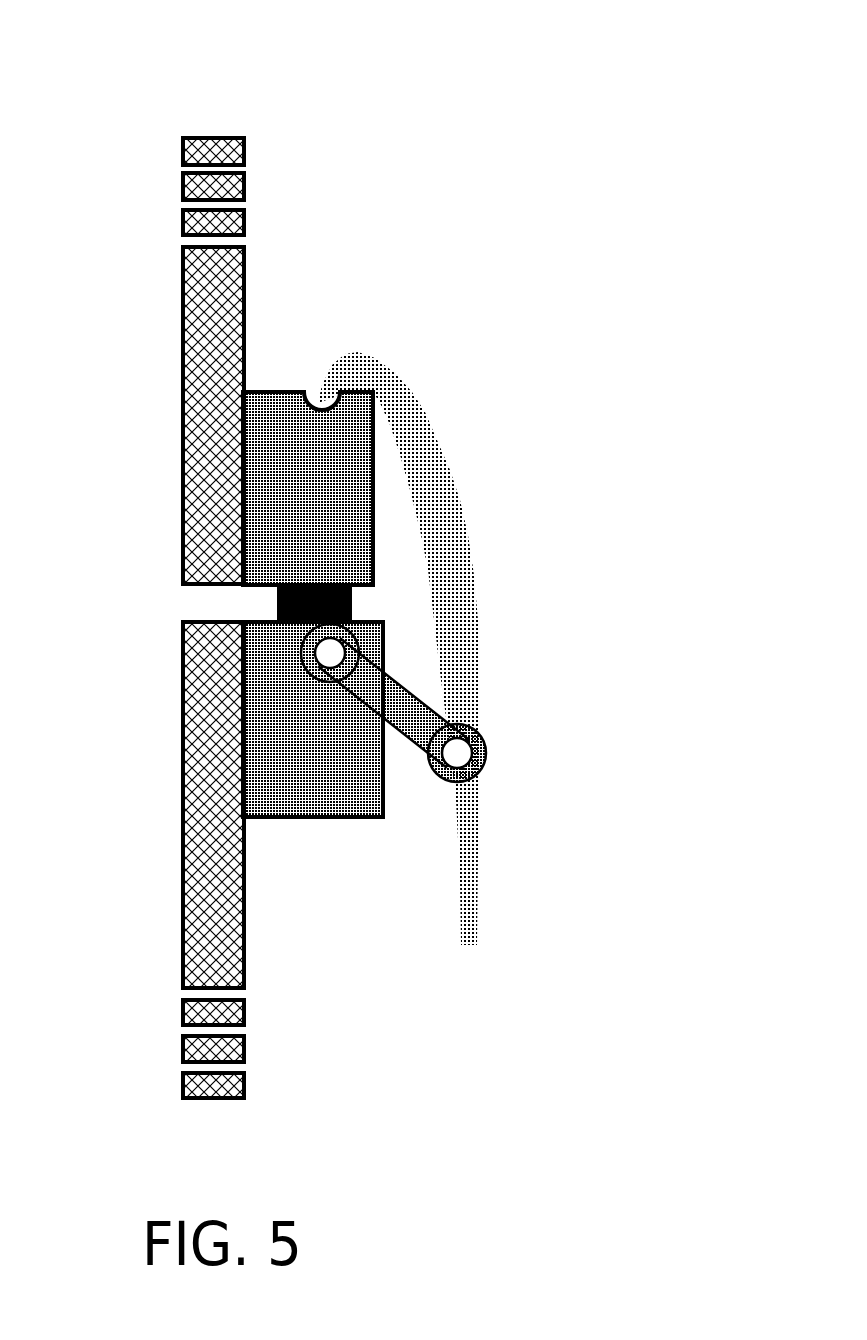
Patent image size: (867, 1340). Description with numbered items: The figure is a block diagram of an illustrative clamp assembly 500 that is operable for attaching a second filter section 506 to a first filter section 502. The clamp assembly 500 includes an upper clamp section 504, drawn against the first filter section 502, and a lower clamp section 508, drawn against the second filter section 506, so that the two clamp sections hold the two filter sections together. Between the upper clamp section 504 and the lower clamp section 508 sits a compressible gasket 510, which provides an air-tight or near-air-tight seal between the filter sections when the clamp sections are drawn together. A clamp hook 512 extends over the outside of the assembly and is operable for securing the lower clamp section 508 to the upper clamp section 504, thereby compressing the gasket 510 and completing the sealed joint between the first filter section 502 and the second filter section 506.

The clamp assembly 500 is at (310, 132).
The first filter section 502 is at (182, 480).
The upper clamp section 504 is at (278, 420).
The second filter section 506 is at (182, 928).
The lower clamp section 508 is at (278, 798).
The compressible gasket 510 is at (372, 607).
The clamp hook 512 is at (438, 493).